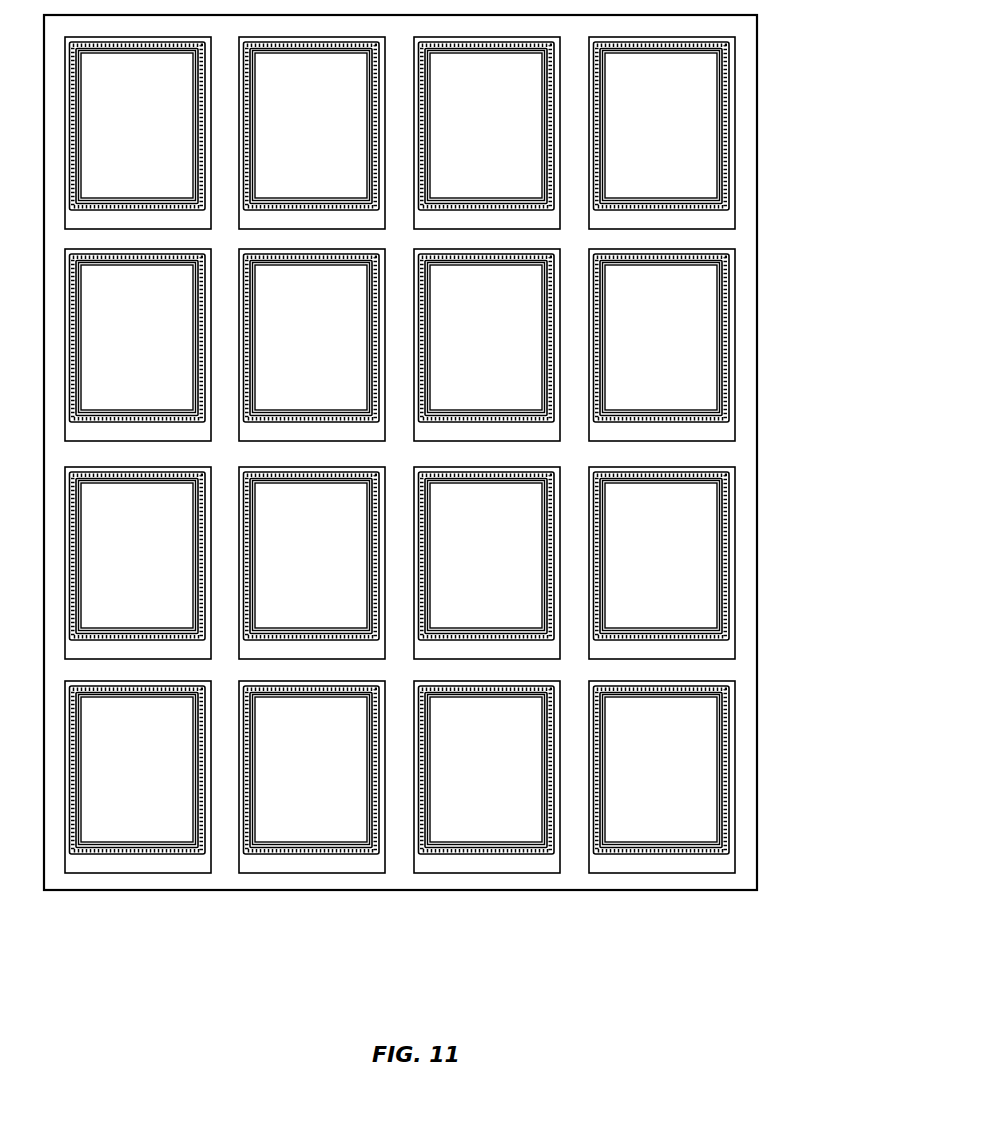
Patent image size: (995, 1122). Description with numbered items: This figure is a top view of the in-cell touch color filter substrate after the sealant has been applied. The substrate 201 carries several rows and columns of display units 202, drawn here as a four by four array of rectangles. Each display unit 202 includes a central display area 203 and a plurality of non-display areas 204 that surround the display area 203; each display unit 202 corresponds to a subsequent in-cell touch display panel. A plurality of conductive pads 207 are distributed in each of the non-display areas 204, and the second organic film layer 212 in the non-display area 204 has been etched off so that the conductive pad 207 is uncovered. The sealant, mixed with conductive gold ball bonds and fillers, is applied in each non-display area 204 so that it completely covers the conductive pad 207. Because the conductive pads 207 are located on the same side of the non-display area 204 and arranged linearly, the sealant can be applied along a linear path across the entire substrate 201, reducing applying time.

The substrate 201 is at (737, 342).
The display unit 202 is at (730, 133).
The display area 203 is at (670, 133).
The non-display area 204 is at (732, 71).
The conductive pad 207 is at (717, 638).
The second organic film layer 212 is at (728, 590).